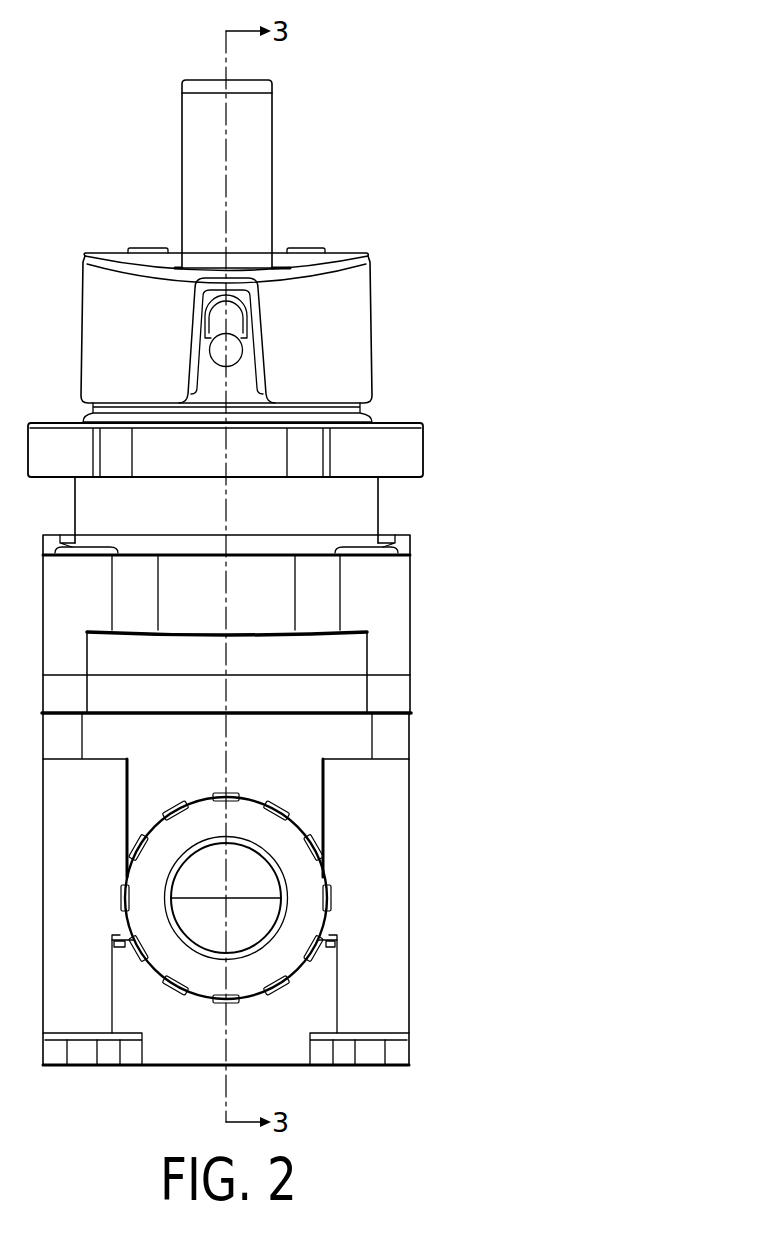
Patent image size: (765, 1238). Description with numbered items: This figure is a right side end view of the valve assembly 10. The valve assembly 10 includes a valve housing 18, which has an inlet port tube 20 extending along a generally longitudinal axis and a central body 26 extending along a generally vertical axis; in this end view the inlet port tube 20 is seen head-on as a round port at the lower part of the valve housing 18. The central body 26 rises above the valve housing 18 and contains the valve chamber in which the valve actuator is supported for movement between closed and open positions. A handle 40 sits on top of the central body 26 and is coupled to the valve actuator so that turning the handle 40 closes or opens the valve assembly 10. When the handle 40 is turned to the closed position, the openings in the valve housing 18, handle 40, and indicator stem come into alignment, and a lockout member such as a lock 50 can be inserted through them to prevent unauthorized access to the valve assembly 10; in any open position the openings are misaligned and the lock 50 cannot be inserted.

The valve assembly 10 is at (497, 120).
The valve housing 18 is at (408, 612).
The inlet port tube 20 is at (257, 915).
The central body 26 is at (377, 512).
The handle 40 is at (358, 283).
The lock 50 is at (273, 117).